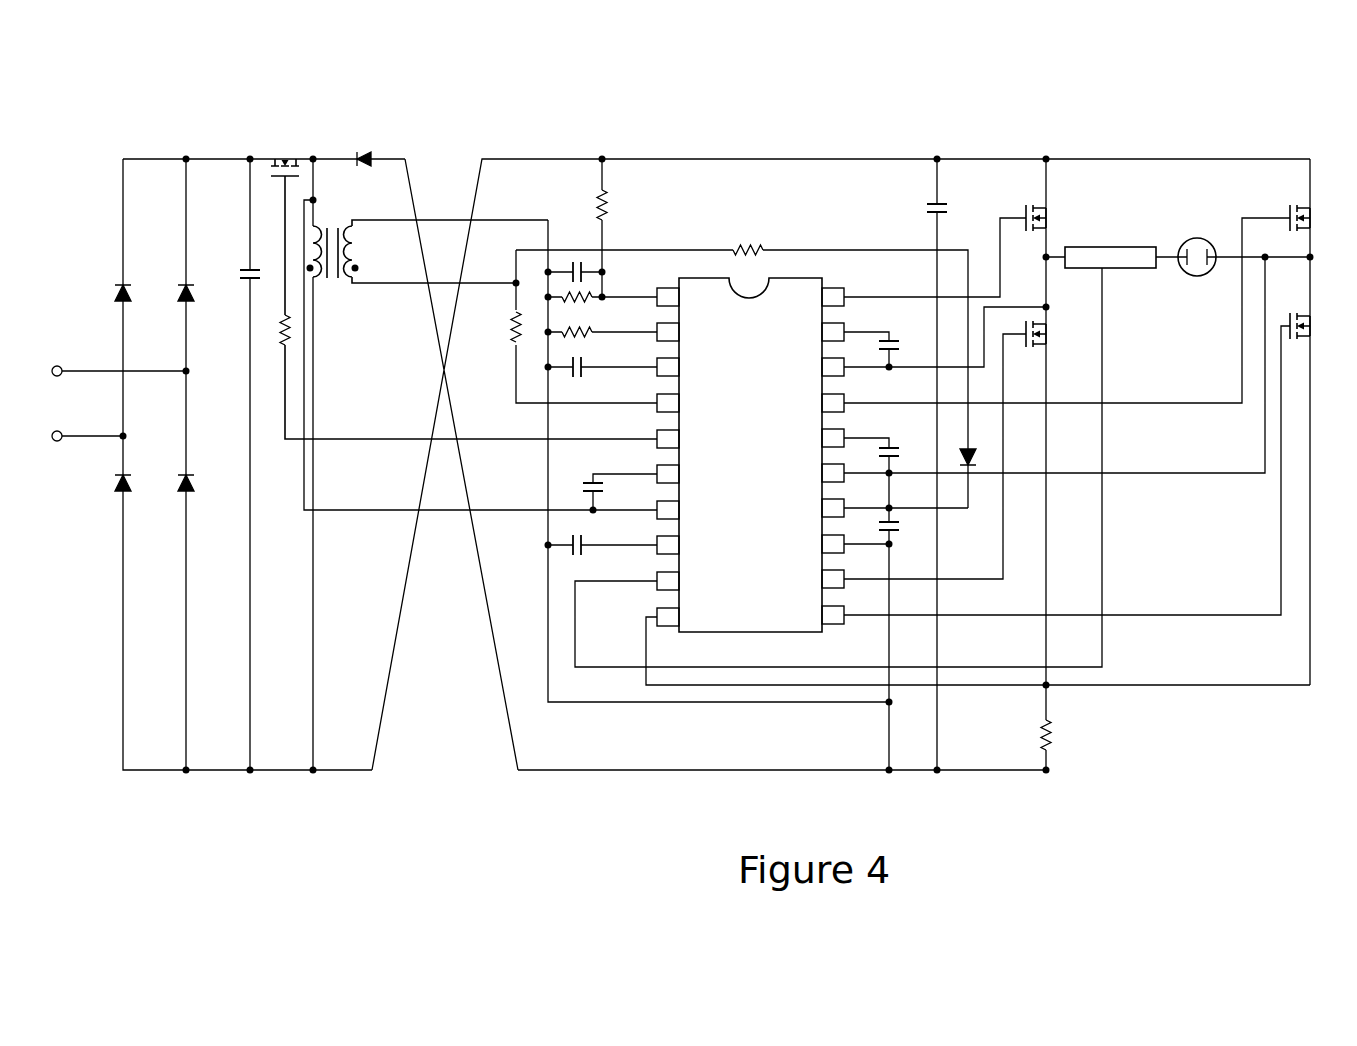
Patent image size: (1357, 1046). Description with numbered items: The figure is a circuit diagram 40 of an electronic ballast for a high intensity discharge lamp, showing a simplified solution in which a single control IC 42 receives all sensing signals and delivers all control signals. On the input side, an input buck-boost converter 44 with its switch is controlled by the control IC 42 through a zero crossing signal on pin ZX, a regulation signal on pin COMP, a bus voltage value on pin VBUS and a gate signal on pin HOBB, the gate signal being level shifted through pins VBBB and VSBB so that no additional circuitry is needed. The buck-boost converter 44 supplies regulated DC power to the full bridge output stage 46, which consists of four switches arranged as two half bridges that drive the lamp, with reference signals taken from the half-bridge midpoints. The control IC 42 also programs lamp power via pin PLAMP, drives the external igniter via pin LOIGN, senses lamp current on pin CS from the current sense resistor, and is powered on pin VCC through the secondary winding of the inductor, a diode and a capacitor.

The circuit diagram 40 is at (752, 811).
The control IC 42 is at (738, 340).
The input buck-boost converter 44 is at (281, 116).
The full bridge output stage 46 is at (1184, 116).